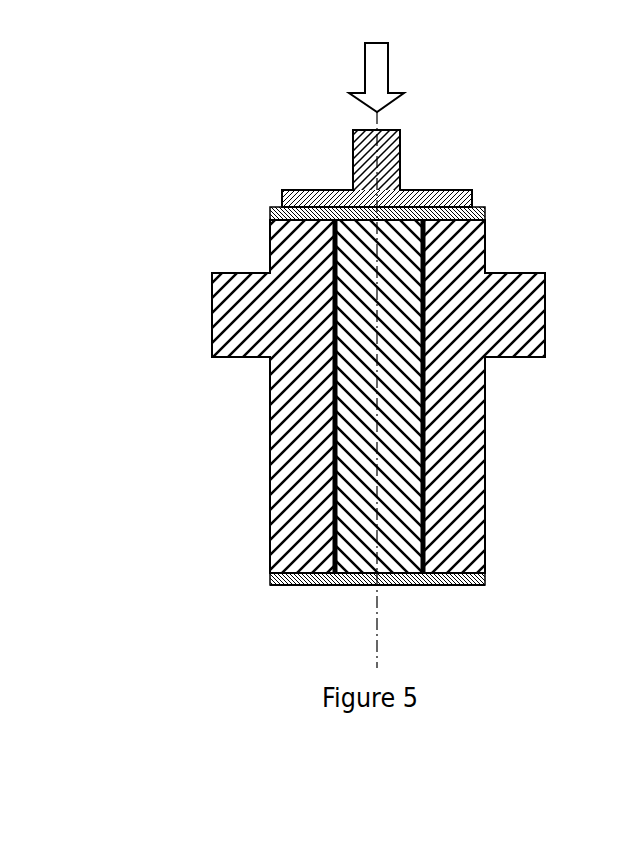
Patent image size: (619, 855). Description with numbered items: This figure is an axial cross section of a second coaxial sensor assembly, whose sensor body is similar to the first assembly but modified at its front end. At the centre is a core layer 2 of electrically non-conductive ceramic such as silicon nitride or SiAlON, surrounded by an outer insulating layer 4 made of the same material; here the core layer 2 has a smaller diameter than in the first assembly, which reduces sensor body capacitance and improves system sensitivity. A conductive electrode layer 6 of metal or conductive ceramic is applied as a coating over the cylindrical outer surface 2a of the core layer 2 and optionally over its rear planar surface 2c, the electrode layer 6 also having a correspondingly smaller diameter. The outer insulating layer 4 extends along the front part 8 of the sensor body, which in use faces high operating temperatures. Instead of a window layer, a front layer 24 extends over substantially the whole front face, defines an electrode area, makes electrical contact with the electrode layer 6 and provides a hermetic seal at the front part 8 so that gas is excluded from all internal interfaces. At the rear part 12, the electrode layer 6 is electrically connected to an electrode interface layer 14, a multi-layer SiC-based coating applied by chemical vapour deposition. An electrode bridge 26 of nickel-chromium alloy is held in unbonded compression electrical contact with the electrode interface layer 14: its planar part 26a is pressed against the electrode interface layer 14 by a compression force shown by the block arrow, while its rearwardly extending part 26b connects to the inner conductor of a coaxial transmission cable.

The core layer 2 is at (332, 388).
The cylindrical outer surface 2a is at (405, 430).
The rear planar surface 2c is at (348, 232).
The outer insulating layer 4 is at (480, 240).
The electrode layer 6 is at (332, 478).
The front part 8 is at (278, 624).
The rear part 12 is at (503, 188).
The electrode interface layer 14 is at (270, 218).
The front layer 24 is at (433, 578).
The electrode bridge 26 is at (362, 158).
The planar part 26a is at (425, 192).
The rearwardly extending part 26b is at (393, 153).